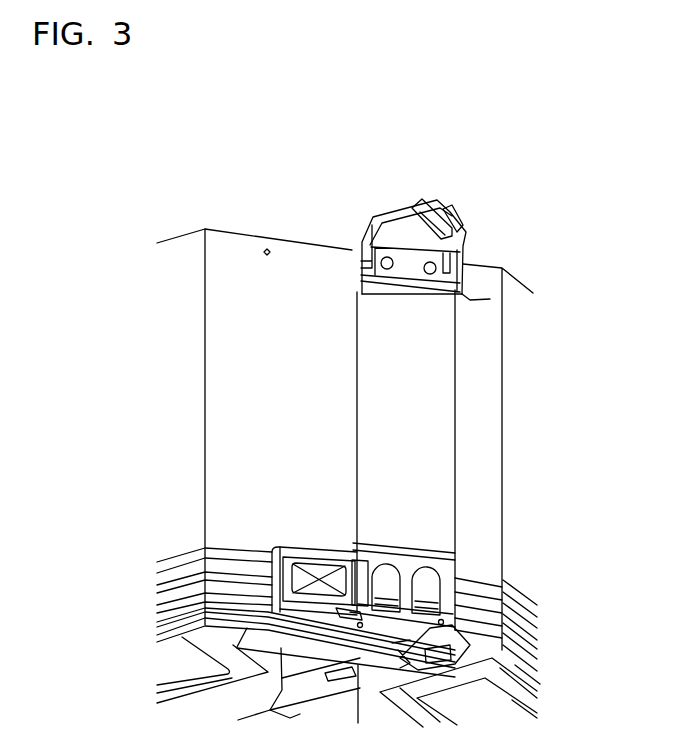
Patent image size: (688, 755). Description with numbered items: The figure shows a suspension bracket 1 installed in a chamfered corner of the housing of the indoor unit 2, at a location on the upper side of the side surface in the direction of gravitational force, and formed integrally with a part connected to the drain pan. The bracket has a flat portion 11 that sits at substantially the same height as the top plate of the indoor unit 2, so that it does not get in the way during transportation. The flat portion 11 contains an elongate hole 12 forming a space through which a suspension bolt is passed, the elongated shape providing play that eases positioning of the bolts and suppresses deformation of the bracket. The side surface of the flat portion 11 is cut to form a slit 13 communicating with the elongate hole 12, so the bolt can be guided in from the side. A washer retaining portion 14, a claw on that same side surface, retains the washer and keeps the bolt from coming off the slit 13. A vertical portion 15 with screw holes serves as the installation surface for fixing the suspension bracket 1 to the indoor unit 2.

The suspension bracket 1 is at (453, 221).
The flat portion 11 is at (464, 247).
The elongate hole 12 is at (373, 216).
The slit 13 is at (416, 207).
The washer retaining portion 14 is at (446, 205).
The vertical portion 15 is at (462, 294).
The indoor unit 2 is at (520, 398).